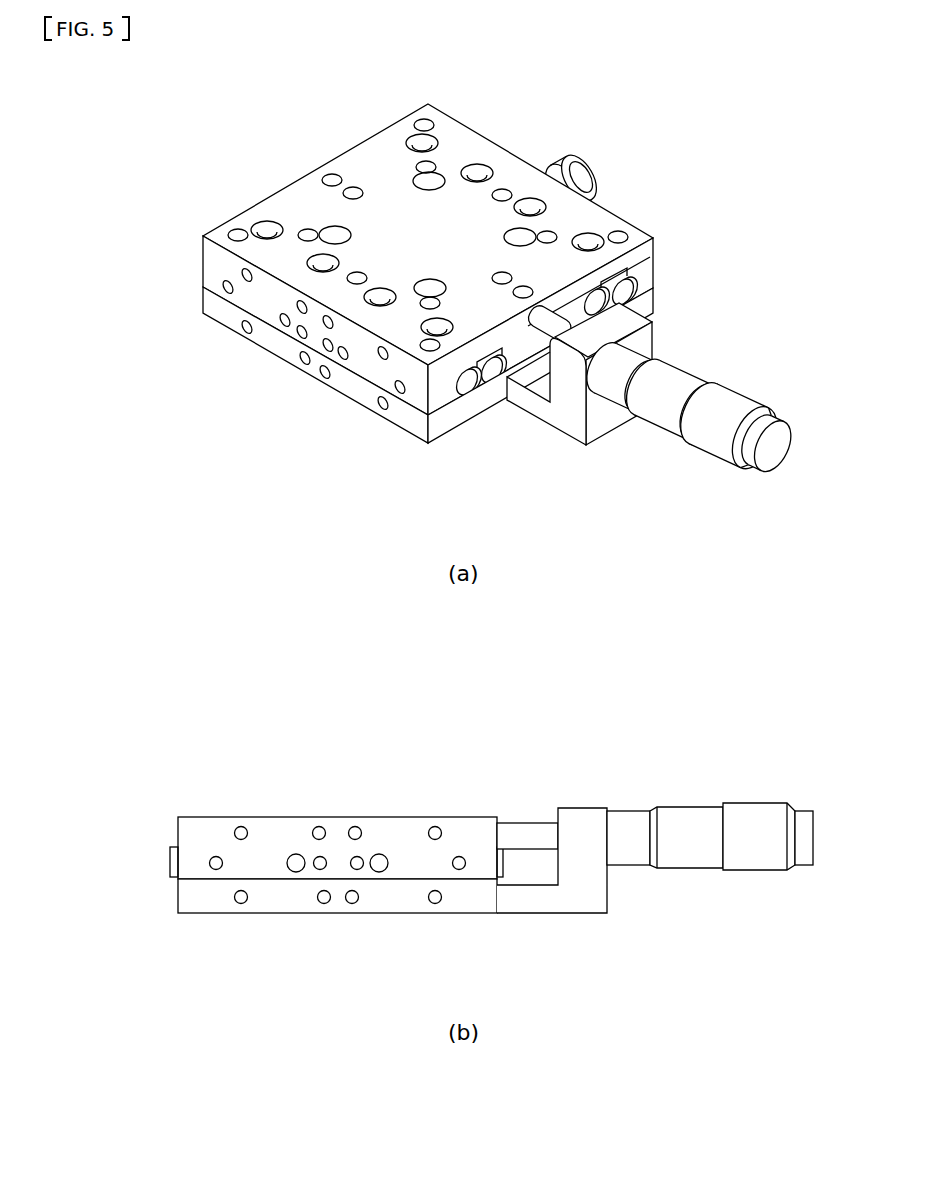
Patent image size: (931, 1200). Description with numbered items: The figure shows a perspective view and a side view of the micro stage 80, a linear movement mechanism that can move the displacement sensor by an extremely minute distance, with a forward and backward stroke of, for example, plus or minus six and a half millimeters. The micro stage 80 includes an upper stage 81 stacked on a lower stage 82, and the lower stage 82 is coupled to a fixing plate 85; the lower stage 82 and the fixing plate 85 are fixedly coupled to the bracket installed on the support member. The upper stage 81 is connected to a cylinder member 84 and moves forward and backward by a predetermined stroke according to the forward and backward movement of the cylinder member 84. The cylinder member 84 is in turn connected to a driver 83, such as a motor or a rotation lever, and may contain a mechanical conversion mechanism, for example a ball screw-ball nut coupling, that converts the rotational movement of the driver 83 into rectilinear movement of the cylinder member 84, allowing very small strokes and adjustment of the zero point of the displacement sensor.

The micro stage 80 is at (826, 194).
The upper stage 81 is at (207, 276).
The lower stage 82 is at (280, 345).
The driver 83 is at (713, 437).
The cylinder member 84 is at (650, 263).
The fixing plate 85 is at (562, 422).